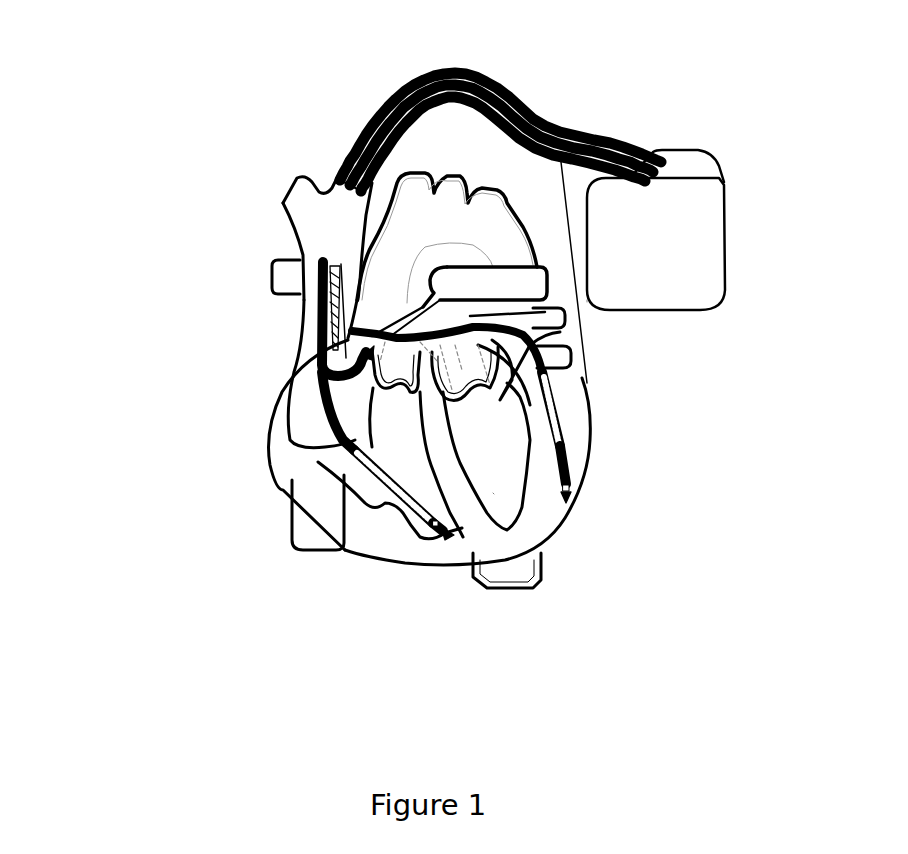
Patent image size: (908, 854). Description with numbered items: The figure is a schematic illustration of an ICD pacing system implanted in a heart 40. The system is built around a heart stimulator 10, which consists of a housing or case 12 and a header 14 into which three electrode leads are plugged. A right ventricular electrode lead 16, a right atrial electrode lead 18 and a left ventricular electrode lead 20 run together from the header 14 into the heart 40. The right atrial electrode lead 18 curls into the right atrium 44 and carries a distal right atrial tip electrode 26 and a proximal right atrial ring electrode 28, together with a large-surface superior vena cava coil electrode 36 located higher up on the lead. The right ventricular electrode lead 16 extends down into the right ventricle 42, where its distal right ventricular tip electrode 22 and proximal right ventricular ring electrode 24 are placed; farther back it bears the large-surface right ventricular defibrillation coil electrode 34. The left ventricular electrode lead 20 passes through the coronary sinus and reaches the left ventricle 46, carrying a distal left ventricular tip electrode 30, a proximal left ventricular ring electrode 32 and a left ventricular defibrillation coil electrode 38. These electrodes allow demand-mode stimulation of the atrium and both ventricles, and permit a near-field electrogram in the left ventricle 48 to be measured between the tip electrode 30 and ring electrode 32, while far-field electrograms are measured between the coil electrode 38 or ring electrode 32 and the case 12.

The heart stimulator 10 is at (770, 291).
The housing or case 12 is at (682, 286).
The header 14 is at (700, 162).
The right ventricular electrode lead 16 is at (353, 145).
The right atrial electrode lead 18 is at (392, 108).
The left ventricular electrode lead 20 is at (580, 288).
The right ventricular tip electrode 22 is at (450, 535).
The right ventricular ring electrode 24 is at (437, 527).
The right atrial tip electrode 26 is at (343, 340).
The right atrial ring electrode 28 is at (352, 360).
The left ventricular tip electrode 30 is at (566, 503).
The left ventricular ring electrode 32 is at (569, 490).
The right ventricular defibrillation coil electrode 34 is at (372, 481).
The superior vena cava coil electrode 36 is at (313, 318).
The left ventricular defibrillation coil electrode 38 is at (571, 432).
The heart 40 is at (244, 474).
The right ventricle 42 is at (368, 493).
The right atrium 44 is at (307, 411).
The left ventricle 46 is at (492, 490).
The left ventricle 48 is at (292, 240).